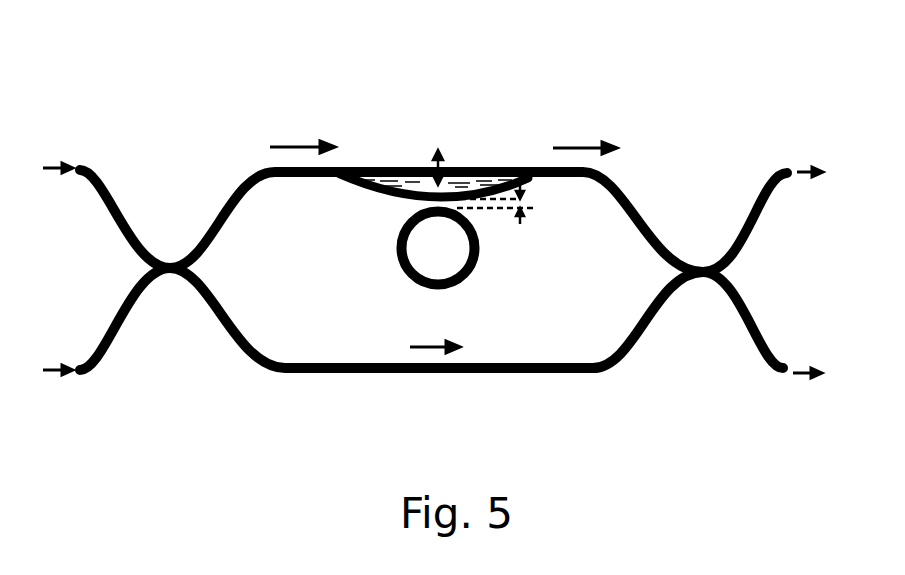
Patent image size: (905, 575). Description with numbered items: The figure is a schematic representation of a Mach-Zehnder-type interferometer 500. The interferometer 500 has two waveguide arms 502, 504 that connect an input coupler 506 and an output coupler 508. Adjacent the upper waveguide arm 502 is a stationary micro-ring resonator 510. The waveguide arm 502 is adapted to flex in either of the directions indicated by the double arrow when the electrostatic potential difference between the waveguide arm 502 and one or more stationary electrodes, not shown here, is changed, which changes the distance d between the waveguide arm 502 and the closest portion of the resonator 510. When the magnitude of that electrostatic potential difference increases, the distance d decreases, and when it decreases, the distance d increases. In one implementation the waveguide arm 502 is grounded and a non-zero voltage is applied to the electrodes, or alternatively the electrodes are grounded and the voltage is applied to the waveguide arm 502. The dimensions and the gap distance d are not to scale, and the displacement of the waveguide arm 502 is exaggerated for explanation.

The Mach-Zehnder-type interferometer 500 is at (768, 51).
The waveguide arm 502 is at (330, 180).
The waveguide arm 504 is at (303, 373).
The input coupler 506 is at (171, 295).
The output coupler 508 is at (703, 300).
The micro-ring resonator 510 is at (468, 273).